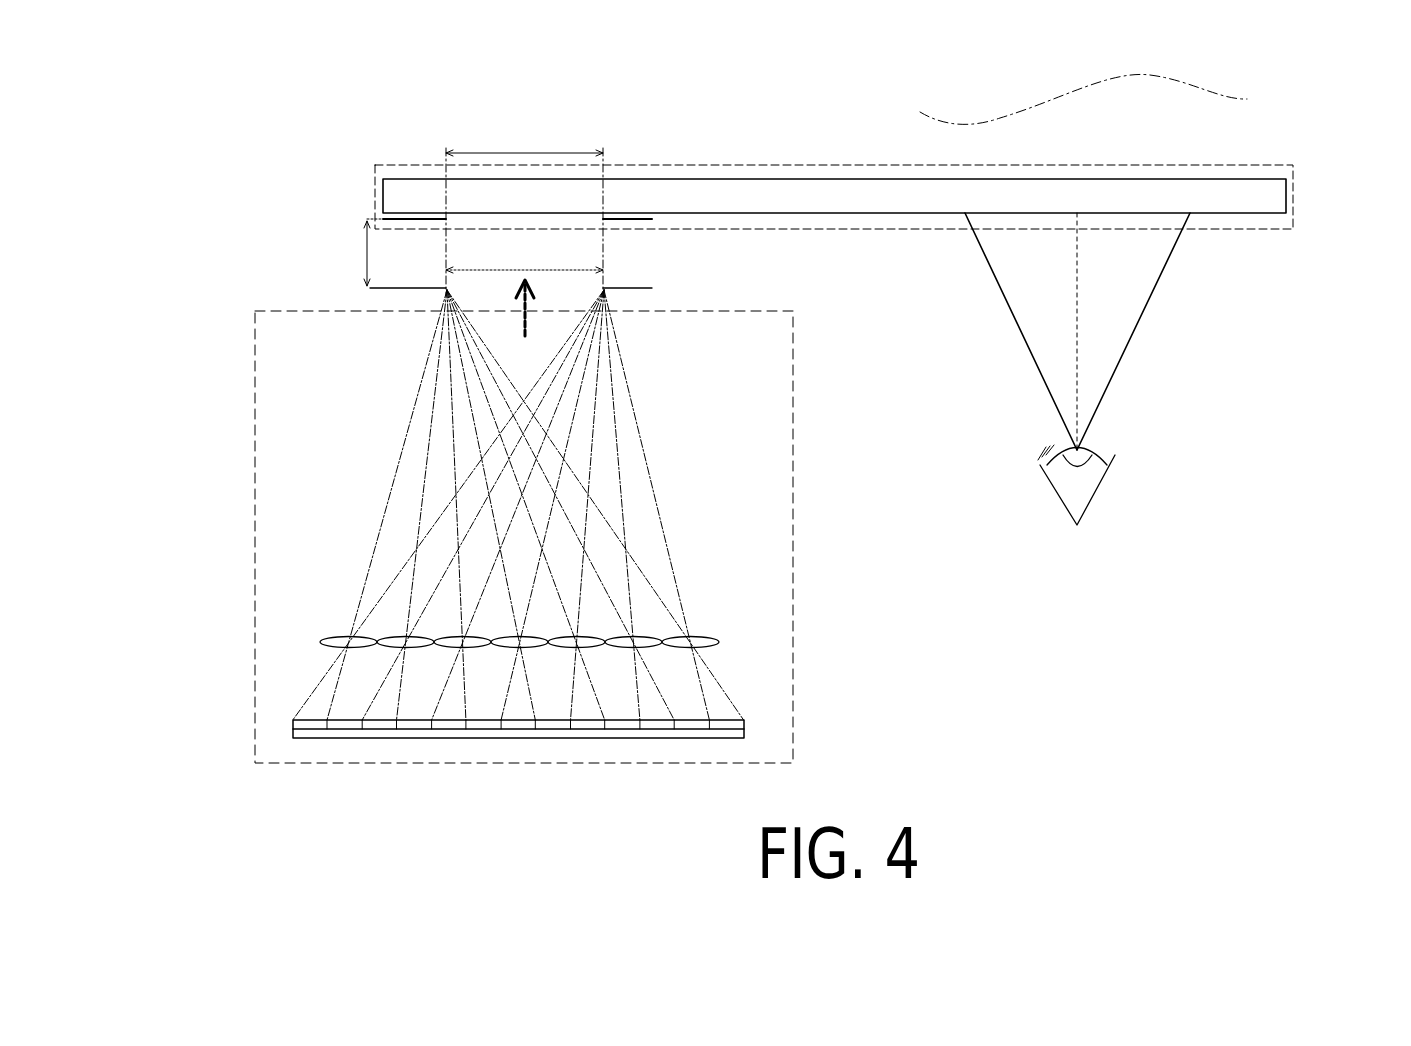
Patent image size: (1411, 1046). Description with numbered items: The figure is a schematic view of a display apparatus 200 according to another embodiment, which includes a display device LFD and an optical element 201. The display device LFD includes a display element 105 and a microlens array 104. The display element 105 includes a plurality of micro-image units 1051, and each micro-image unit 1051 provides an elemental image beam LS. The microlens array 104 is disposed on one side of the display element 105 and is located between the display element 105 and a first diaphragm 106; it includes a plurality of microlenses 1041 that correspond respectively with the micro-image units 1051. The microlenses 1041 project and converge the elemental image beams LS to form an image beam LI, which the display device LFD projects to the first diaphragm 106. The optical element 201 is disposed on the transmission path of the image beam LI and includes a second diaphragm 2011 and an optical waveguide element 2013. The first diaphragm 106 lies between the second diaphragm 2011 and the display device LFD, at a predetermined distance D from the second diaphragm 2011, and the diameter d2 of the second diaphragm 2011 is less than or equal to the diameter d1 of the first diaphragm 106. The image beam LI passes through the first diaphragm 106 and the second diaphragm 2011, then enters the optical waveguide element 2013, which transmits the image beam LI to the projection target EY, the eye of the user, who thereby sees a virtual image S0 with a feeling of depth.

The display apparatus 200 is at (1337, 762).
The optical element 201 is at (1294, 202).
The optical waveguide element 2013 is at (713, 213).
The second diaphragm 2011 is at (645, 222).
The first diaphragm 106 is at (642, 288).
The display device LFD is at (255, 387).
The elemental image beam LS is at (396, 472).
The microlens array 104 is at (438, 600).
The microlens 1041 is at (340, 636).
The display element 105 is at (481, 775).
The micro-image unit 1051 is at (350, 723).
The virtual image S0 is at (918, 111).
The projection target EY is at (1087, 490).
The image beam LI is at (523, 327).
The predetermined distance D is at (360, 252).
The diameter of the first diaphragm d1 is at (524, 257).
The diameter of the second diaphragm d2 is at (524, 130).